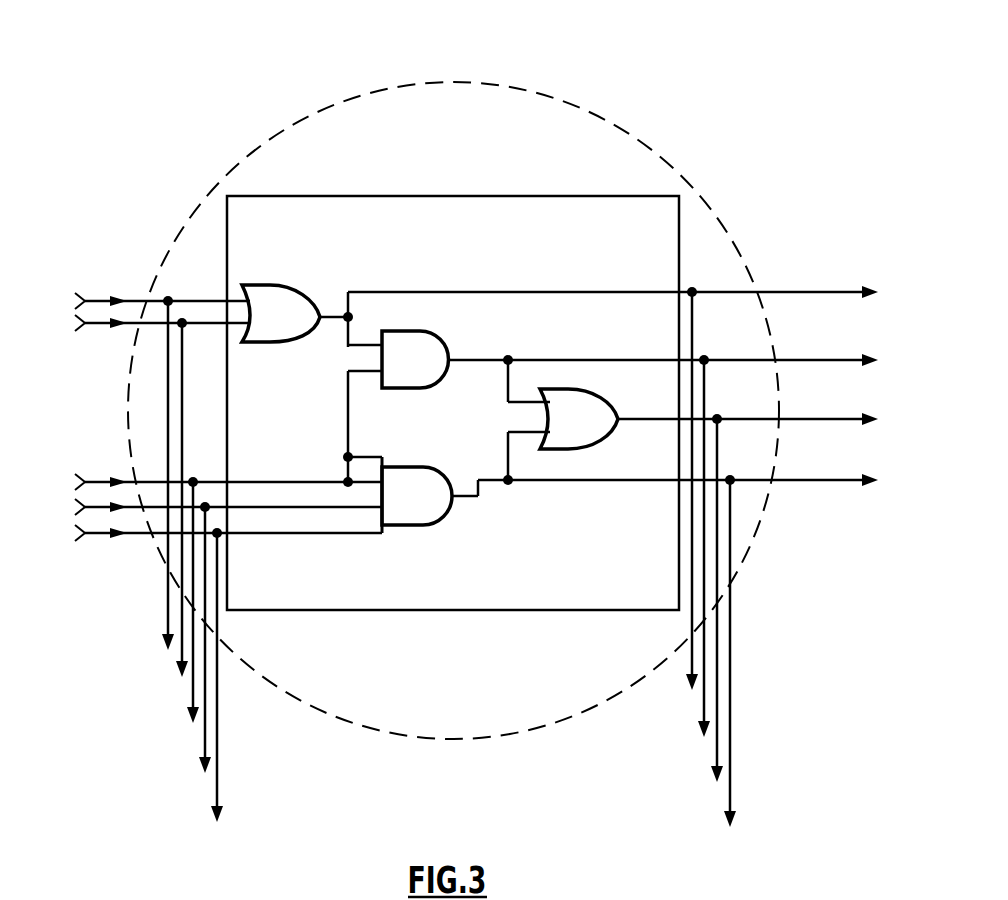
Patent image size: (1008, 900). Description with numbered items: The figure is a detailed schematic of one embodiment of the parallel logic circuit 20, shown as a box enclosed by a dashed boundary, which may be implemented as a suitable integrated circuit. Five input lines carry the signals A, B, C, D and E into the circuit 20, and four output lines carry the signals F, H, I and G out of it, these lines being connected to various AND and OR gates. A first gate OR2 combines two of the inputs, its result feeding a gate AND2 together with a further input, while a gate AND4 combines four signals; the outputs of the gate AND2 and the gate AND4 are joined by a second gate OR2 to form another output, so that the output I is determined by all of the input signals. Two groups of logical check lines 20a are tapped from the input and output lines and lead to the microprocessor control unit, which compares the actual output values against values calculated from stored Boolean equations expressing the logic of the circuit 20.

The parallel logic circuit 20 is at (453, 395).
The logical check lines 20a is at (168, 612).
The two-input OR gate OR2 is at (449, 373).
The two-input AND gate AND2 is at (434, 377).
The four-input AND gate AND4 is at (438, 504).